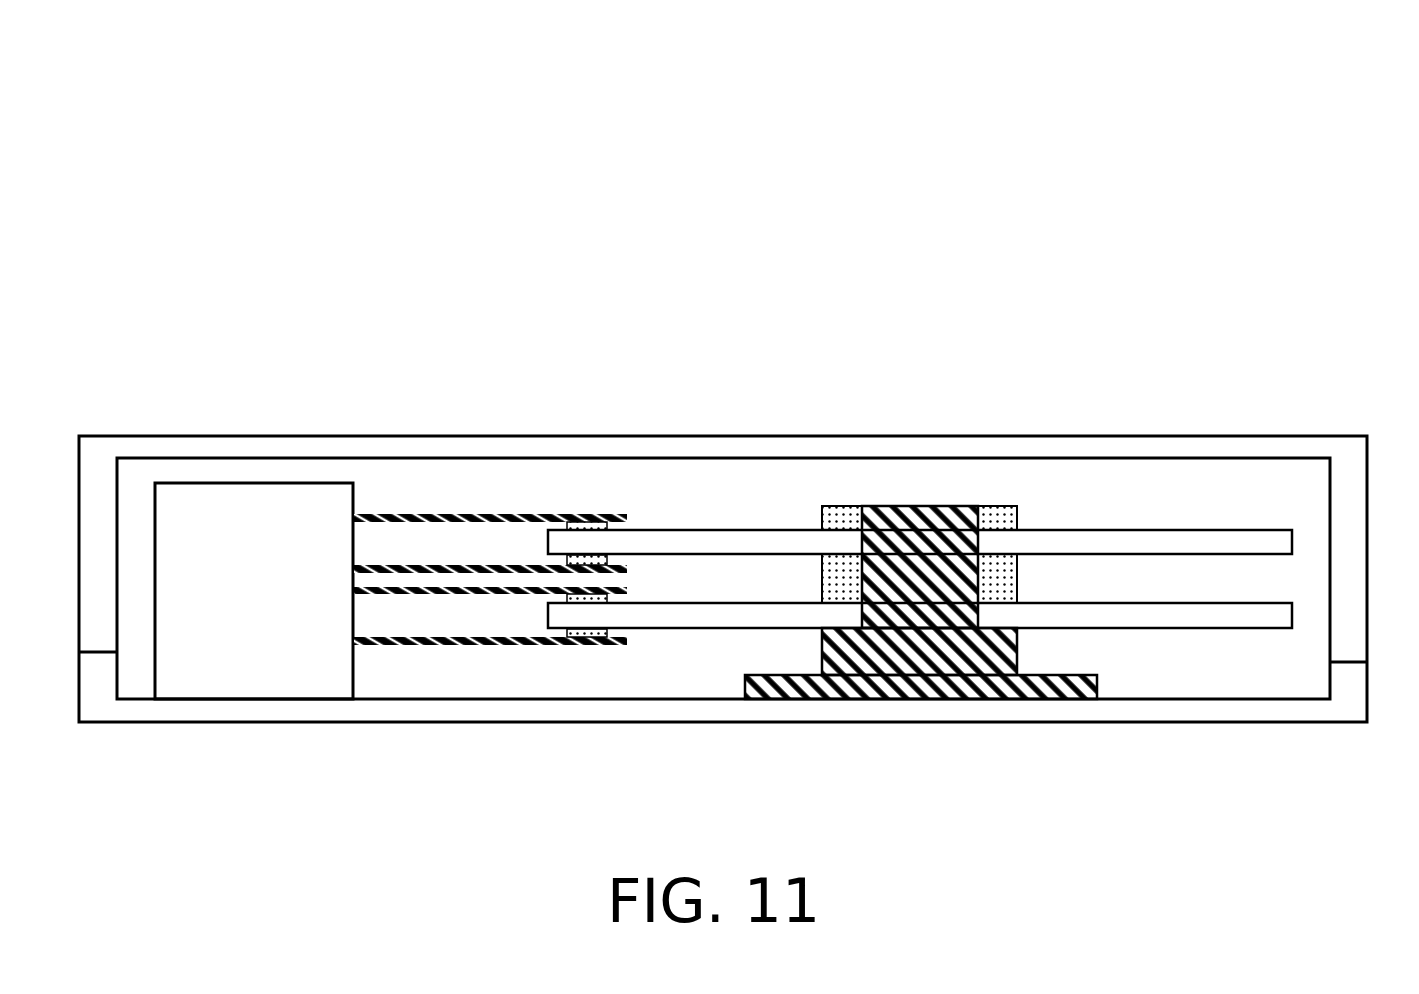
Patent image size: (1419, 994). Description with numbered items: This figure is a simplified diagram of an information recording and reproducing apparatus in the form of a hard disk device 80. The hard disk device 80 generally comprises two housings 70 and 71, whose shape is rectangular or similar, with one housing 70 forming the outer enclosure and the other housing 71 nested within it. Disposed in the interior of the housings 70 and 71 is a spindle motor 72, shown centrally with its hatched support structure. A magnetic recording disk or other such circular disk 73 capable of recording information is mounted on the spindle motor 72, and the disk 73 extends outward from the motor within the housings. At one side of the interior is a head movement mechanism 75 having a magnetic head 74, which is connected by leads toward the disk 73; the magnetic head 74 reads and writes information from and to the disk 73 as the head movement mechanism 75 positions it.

The housing 70 is at (1198, 710).
The housing 71 is at (1158, 452).
The spindle motor 72 is at (888, 557).
The disk 73 is at (1094, 515).
The magnetic head 74 is at (592, 517).
The head movement mechanism 75 is at (297, 528).
The hard disk device 80 is at (727, 350).